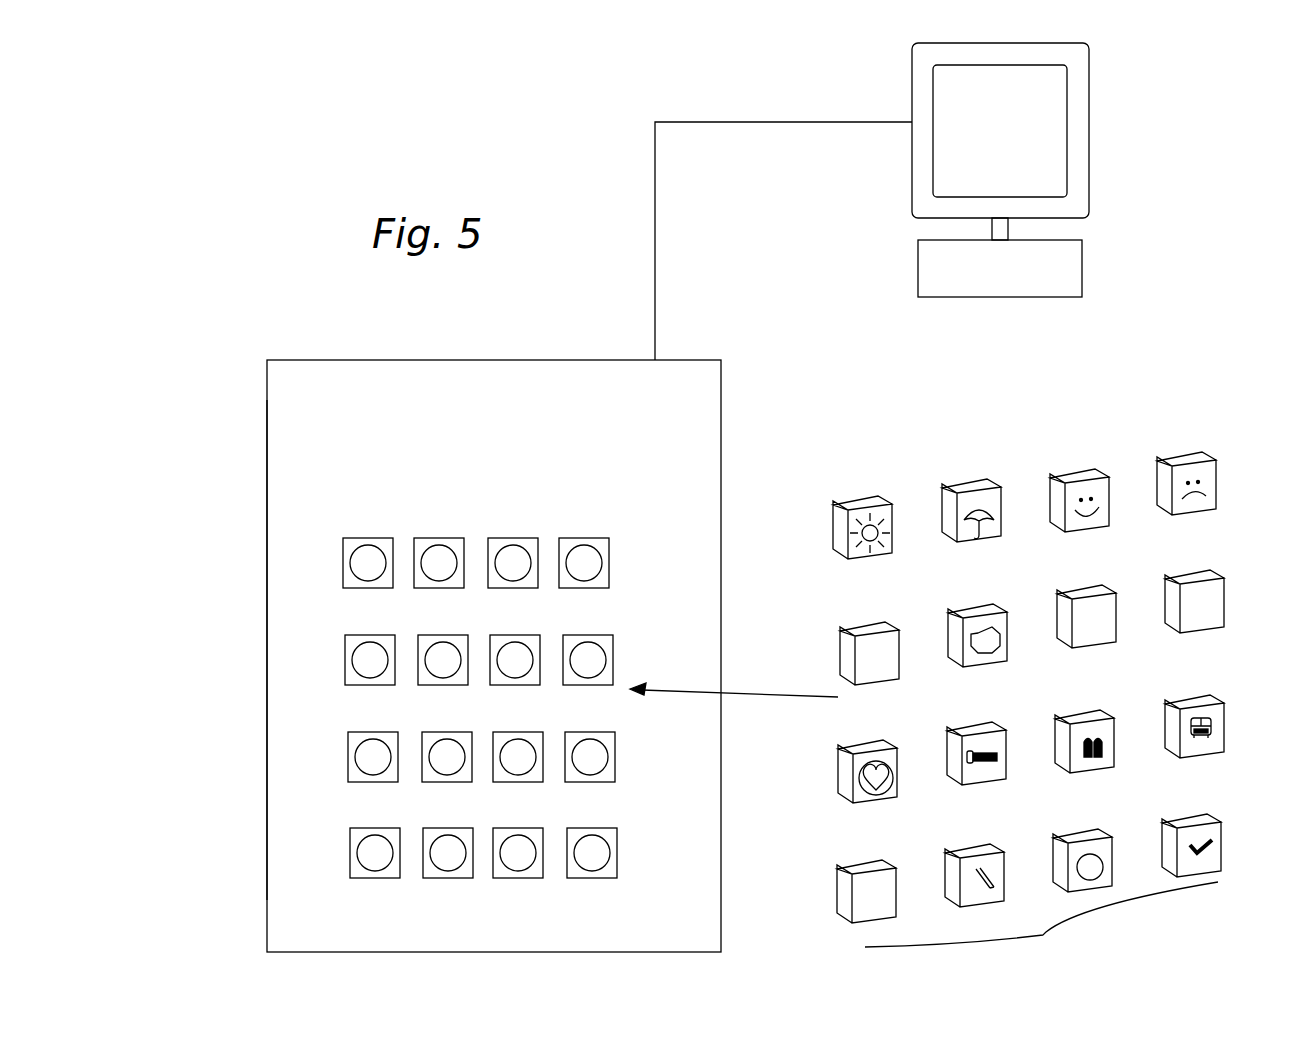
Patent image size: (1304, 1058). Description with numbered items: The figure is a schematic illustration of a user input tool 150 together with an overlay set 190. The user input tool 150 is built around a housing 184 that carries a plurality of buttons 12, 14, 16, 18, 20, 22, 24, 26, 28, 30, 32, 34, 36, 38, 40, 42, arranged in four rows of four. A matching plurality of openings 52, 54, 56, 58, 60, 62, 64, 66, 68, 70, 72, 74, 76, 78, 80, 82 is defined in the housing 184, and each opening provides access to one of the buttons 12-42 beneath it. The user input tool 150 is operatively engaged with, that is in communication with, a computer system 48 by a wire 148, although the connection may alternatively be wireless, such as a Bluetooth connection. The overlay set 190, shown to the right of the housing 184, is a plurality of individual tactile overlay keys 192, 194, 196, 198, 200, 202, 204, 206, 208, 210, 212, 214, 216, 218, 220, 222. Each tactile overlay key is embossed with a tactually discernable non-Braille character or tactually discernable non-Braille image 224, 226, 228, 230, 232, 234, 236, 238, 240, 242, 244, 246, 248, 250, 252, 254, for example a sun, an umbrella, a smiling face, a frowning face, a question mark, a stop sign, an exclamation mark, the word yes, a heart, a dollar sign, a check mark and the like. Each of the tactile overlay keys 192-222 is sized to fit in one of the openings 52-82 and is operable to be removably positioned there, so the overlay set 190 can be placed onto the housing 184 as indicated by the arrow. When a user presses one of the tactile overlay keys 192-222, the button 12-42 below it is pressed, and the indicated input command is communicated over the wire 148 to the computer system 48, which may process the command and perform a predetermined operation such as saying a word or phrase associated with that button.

The computer system 48 is at (1088, 77).
The wire 148 is at (655, 222).
The user input tool 150 is at (687, 360).
The housing 184 is at (272, 517).
The overlay set 190 is at (1049, 672).
The button 12 is at (360, 571).
The button 14 is at (431, 571).
The button 16 is at (505, 571).
The button 18 is at (576, 571).
The button 20 is at (362, 668).
The button 22 is at (435, 668).
The button 24 is at (507, 668).
The button 26 is at (580, 668).
The button 28 is at (365, 765).
The button 30 is at (439, 765).
The button 32 is at (510, 765).
The button 34 is at (582, 765).
The button 36 is at (367, 861).
The button 38 is at (440, 861).
The button 40 is at (510, 861).
The button 42 is at (584, 861).
The opening 52 is at (359, 539).
The opening 54 is at (430, 539).
The opening 56 is at (504, 539).
The opening 58 is at (575, 539).
The opening 60 is at (361, 636).
The opening 62 is at (434, 636).
The opening 64 is at (506, 636).
The opening 66 is at (579, 636).
The opening 68 is at (364, 733).
The opening 70 is at (438, 733).
The opening 72 is at (509, 733).
The opening 74 is at (581, 733).
The opening 76 is at (366, 829).
The opening 78 is at (439, 829).
The opening 80 is at (509, 829).
The opening 82 is at (583, 829).
The tactile overlay key 192 is at (863, 502).
The tactile overlay key 194 is at (972, 485).
The tactile overlay key 196 is at (1080, 475).
The tactile overlay key 198 is at (1187, 458).
The tactile overlay key 200 is at (870, 628).
The tactile overlay key 202 is at (978, 610).
The tactile overlay key 204 is at (1087, 591).
The tactile overlay key 206 is at (1195, 576).
The tactile overlay key 208 is at (868, 746).
The tactile overlay key 210 is at (977, 728).
The tactile overlay key 212 is at (1085, 716).
The tactile overlay key 214 is at (1195, 701).
The tactile overlay key 216 is at (867, 866).
The tactile overlay key 218 is at (975, 850).
The tactile overlay key 220 is at (1083, 835).
The tactile overlay key 222 is at (1192, 820).
The tactually discernable non-Braille image 224 is at (876, 532).
The tactually discernable non-Braille image 226 is at (985, 515).
The tactually discernable non-Braille image 228 is at (1093, 505).
The tactually discernable non-Braille image 230 is at (1200, 488).
The tactually discernable non-Braille image 232 is at (883, 658).
The tactually discernable non-Braille image 234 is at (991, 640).
The tactually discernable non-Braille image 236 is at (1100, 621).
The tactually discernable non-Braille image 238 is at (1208, 606).
The tactually discernable non-Braille image 240 is at (881, 776).
The tactually discernable non-Braille image 242 is at (990, 758).
The tactually discernable non-Braille image 244 is at (1098, 746).
The tactually discernable non-Braille image 246 is at (1208, 731).
The tactually discernable non-Braille image 248 is at (880, 896).
The tactually discernable non-Braille image 250 is at (988, 880).
The tactually discernable non-Braille image 252 is at (1096, 865).
The tactually discernable non-Braille image 254 is at (1205, 850).